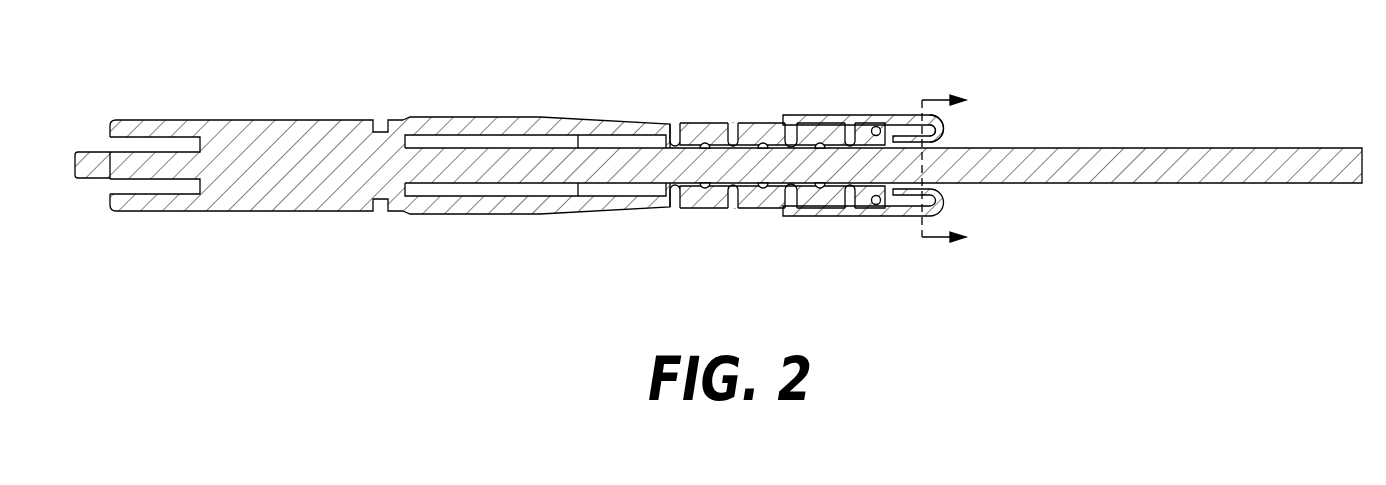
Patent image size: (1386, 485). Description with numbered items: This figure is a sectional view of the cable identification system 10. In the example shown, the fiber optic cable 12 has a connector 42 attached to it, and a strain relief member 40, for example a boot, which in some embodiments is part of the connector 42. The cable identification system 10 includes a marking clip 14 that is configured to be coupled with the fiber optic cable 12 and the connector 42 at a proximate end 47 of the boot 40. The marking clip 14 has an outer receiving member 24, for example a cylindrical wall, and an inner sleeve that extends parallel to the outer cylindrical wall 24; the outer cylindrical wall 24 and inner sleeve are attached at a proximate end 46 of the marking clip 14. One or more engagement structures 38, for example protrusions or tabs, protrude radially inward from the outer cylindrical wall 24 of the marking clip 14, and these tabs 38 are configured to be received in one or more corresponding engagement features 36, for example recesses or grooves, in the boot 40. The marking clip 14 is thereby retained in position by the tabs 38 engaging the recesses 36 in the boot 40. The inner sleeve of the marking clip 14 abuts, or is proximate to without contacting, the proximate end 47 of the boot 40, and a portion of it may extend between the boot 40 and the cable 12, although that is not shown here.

The cable identification system 10 is at (830, 70).
The fiber optic cable 12 is at (1153, 165).
The marking clip 14 is at (895, 122).
The outer receiving member 24 is at (902, 207).
The engagement features 36 is at (788, 188).
The engagement structures 38 is at (791, 194).
The strain relief member 40 is at (745, 127).
The connector 42 is at (470, 127).
The proximate end of marking clip 46 is at (945, 128).
The proximate end of boot 47 is at (876, 127).